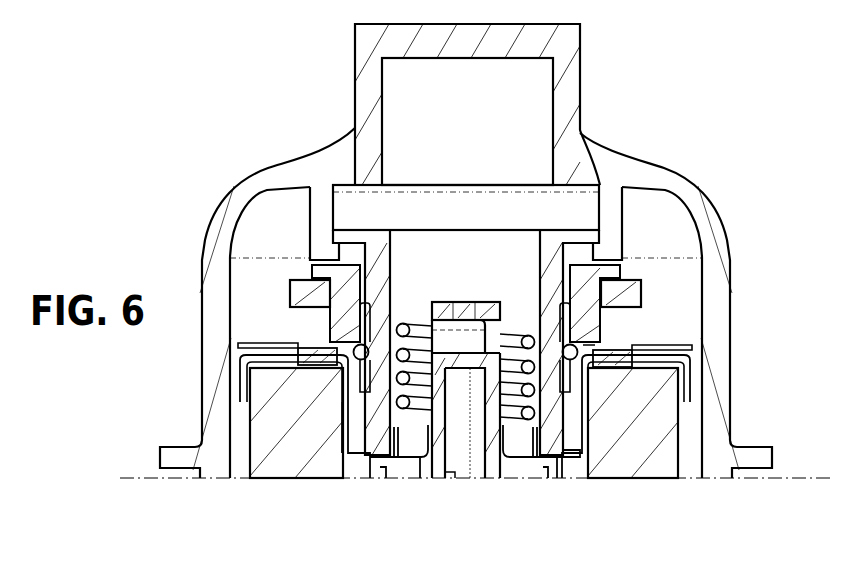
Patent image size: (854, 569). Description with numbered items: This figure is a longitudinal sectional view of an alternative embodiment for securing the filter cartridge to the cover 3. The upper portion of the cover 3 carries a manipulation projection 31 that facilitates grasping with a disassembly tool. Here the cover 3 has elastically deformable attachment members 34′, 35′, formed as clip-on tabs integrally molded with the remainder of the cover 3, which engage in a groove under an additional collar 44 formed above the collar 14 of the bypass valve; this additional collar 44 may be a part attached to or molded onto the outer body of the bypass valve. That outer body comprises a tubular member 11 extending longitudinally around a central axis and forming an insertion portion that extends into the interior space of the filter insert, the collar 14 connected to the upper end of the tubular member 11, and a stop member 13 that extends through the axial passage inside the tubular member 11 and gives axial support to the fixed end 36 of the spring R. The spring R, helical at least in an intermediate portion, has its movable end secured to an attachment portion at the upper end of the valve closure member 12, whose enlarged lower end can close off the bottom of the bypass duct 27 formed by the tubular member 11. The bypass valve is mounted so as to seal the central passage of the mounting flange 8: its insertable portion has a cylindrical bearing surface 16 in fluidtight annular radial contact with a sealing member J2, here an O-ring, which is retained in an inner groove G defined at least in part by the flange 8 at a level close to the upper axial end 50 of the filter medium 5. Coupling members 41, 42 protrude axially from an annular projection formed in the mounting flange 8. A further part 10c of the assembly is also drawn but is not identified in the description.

The cover 3 is at (207, 218).
The manipulation projection 31 is at (355, 50).
The additional collar 44 is at (333, 207).
The coupling member 42 is at (570, 290).
The bypass duct 27 is at (408, 277).
The spring R is at (531, 338).
The attachment member 34′ is at (308, 237).
The attachment member 35′ is at (597, 258).
The inner groove G is at (577, 350).
The sealing member J2 is at (596, 345).
The collar 14 is at (290, 283).
The right ring 10c is at (637, 280).
The coupling member 41 is at (318, 336).
The cylindrical bearing surface 16 is at (568, 388).
The mounting flange 8 is at (243, 378).
The upper axial end 50 is at (262, 380).
The filter medium 5 is at (680, 443).
The valve closure member 12 is at (415, 462).
The tubular member 11 is at (547, 462).
The stop member 13 is at (518, 462).
The fixed end 36 is at (532, 412).